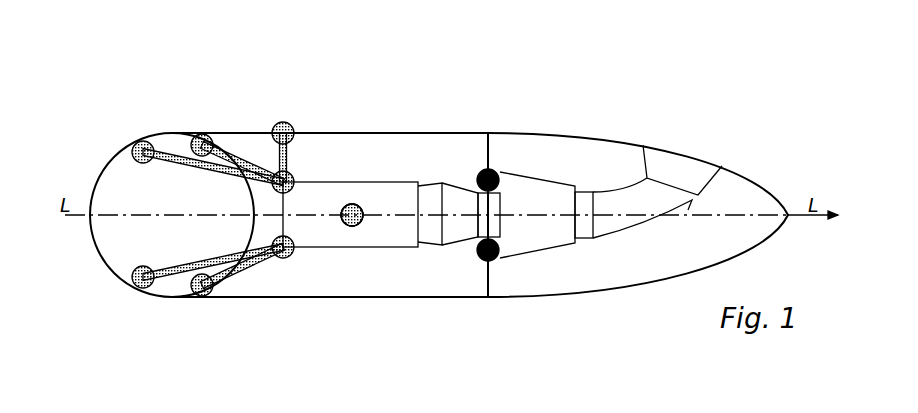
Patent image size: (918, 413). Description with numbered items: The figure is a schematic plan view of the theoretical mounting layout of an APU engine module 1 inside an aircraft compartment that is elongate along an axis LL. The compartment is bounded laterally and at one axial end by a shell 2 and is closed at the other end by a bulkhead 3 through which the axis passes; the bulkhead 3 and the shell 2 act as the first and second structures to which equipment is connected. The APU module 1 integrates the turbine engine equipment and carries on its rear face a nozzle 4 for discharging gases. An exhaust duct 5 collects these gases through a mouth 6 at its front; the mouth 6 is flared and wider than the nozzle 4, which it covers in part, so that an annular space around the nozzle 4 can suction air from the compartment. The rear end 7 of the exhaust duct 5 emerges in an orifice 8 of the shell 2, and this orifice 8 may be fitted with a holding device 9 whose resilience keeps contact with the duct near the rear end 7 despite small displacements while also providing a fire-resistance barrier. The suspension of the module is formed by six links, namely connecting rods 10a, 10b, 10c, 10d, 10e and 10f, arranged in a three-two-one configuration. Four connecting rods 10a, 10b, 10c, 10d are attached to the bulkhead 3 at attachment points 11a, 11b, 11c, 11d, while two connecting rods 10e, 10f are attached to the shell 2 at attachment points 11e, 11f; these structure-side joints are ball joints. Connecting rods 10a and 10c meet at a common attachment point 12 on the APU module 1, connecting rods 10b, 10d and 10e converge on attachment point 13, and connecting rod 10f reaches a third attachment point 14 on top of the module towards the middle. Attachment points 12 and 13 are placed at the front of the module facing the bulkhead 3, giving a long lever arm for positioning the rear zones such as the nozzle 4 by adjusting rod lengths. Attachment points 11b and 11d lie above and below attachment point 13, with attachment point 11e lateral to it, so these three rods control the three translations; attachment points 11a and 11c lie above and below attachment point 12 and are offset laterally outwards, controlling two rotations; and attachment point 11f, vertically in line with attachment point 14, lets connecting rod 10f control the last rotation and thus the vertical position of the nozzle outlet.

The APU engine module 1 is at (390, 193).
The shell 2 is at (517, 135).
The bulkhead 3 is at (113, 187).
The nozzle 4 is at (430, 198).
The exhaust duct 5 is at (550, 195).
The mouth 6 is at (468, 195).
The rear end 7 is at (643, 220).
The orifice 8 is at (683, 168).
The holding device 9 is at (618, 180).
The connecting rod 10a is at (167, 278).
The connecting rod 10b is at (165, 153).
The connecting rod 10c is at (230, 280).
The connecting rod 10d is at (225, 153).
The connecting rod 10e is at (291, 157).
The connecting rod 10f is at (352, 223).
The attachment point 11a is at (137, 288).
The attachment point 11b is at (135, 142).
The attachment point 11c is at (193, 295).
The attachment point 11d is at (193, 133).
The attachment point 11e is at (288, 125).
The attachment point 11f is at (348, 225).
The attachment point 12 is at (283, 258).
The attachment point 13 is at (293, 173).
The attachment point 14 is at (358, 223).